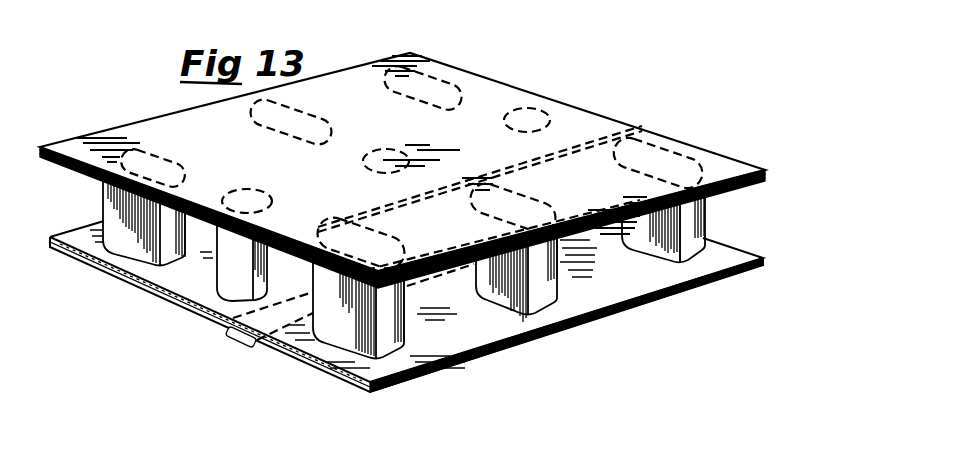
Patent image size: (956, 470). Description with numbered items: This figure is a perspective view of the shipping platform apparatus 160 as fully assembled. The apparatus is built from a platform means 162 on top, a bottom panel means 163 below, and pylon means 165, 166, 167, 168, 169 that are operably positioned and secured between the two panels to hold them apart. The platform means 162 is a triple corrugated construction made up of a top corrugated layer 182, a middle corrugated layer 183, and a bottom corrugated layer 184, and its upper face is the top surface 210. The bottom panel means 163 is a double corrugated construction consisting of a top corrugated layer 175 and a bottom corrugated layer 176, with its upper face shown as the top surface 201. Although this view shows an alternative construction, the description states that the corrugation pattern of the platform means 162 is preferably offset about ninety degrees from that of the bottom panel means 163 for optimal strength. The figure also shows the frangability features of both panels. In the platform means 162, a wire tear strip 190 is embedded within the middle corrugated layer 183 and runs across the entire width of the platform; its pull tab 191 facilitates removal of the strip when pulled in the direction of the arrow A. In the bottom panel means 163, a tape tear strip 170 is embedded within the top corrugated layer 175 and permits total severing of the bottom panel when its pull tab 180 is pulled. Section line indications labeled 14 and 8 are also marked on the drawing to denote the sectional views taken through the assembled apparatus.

The shipping platform apparatus 160 is at (572, 52).
The platform means 162 is at (577, 99).
The top surface 210 is at (488, 95).
The top corrugated layer 182 is at (760, 170).
The middle corrugated layer 183 is at (767, 173).
The bottom corrugated layer 184 is at (762, 181).
The tear strip 190 is at (645, 134).
The pull tab 191 is at (636, 127).
The arrow A is at (638, 79).
The bottom panel means 163 is at (512, 329).
The top surface 201 is at (657, 289).
The top corrugated layer 175 is at (332, 365).
The bottom corrugated layer 176 is at (313, 368).
The tear strip 170 is at (282, 330).
The pull tab 180 is at (228, 338).
The pylon means 165 is at (137, 247).
The pylon means 166 is at (197, 293).
The pylon means 167 is at (388, 358).
The pylon means 168 is at (543, 300).
The pylon means 169 is at (693, 260).
The section line 14- 14 is at (165, 283).
The section line 8- 8 is at (527, 363).